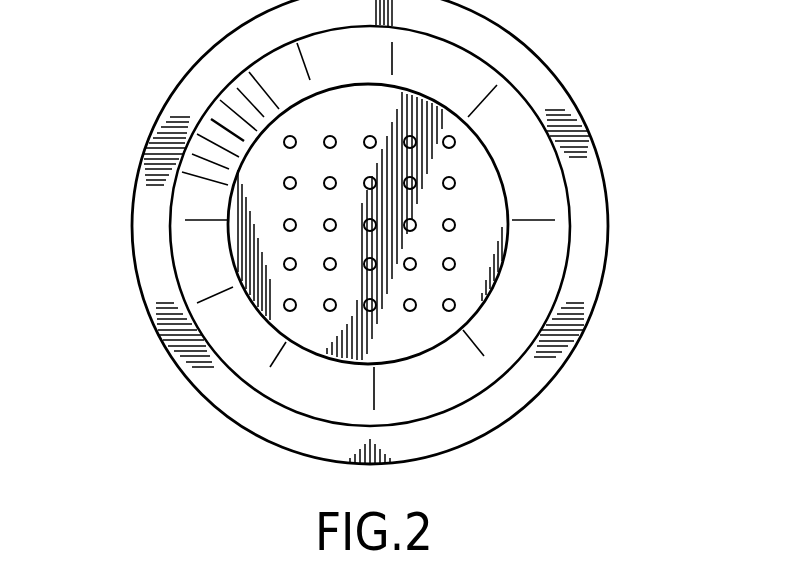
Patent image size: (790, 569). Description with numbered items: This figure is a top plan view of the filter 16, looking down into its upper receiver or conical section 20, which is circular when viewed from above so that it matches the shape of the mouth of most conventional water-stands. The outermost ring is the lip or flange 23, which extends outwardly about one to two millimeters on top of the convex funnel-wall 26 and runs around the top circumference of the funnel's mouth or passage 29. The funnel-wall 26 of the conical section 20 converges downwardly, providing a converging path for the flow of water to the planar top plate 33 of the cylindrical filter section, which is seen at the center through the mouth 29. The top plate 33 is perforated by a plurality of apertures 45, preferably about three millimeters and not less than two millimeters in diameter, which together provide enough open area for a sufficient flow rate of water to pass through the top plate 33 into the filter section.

The filter 16 is at (114, 180).
The receiver or conical section 20 is at (626, 210).
The lip or flange 23 is at (545, 390).
The convex funnel-wall 26 is at (422, 53).
The mouth or passage 29 is at (458, 381).
The top plate 33 is at (246, 239).
The apertures 45 is at (373, 139).